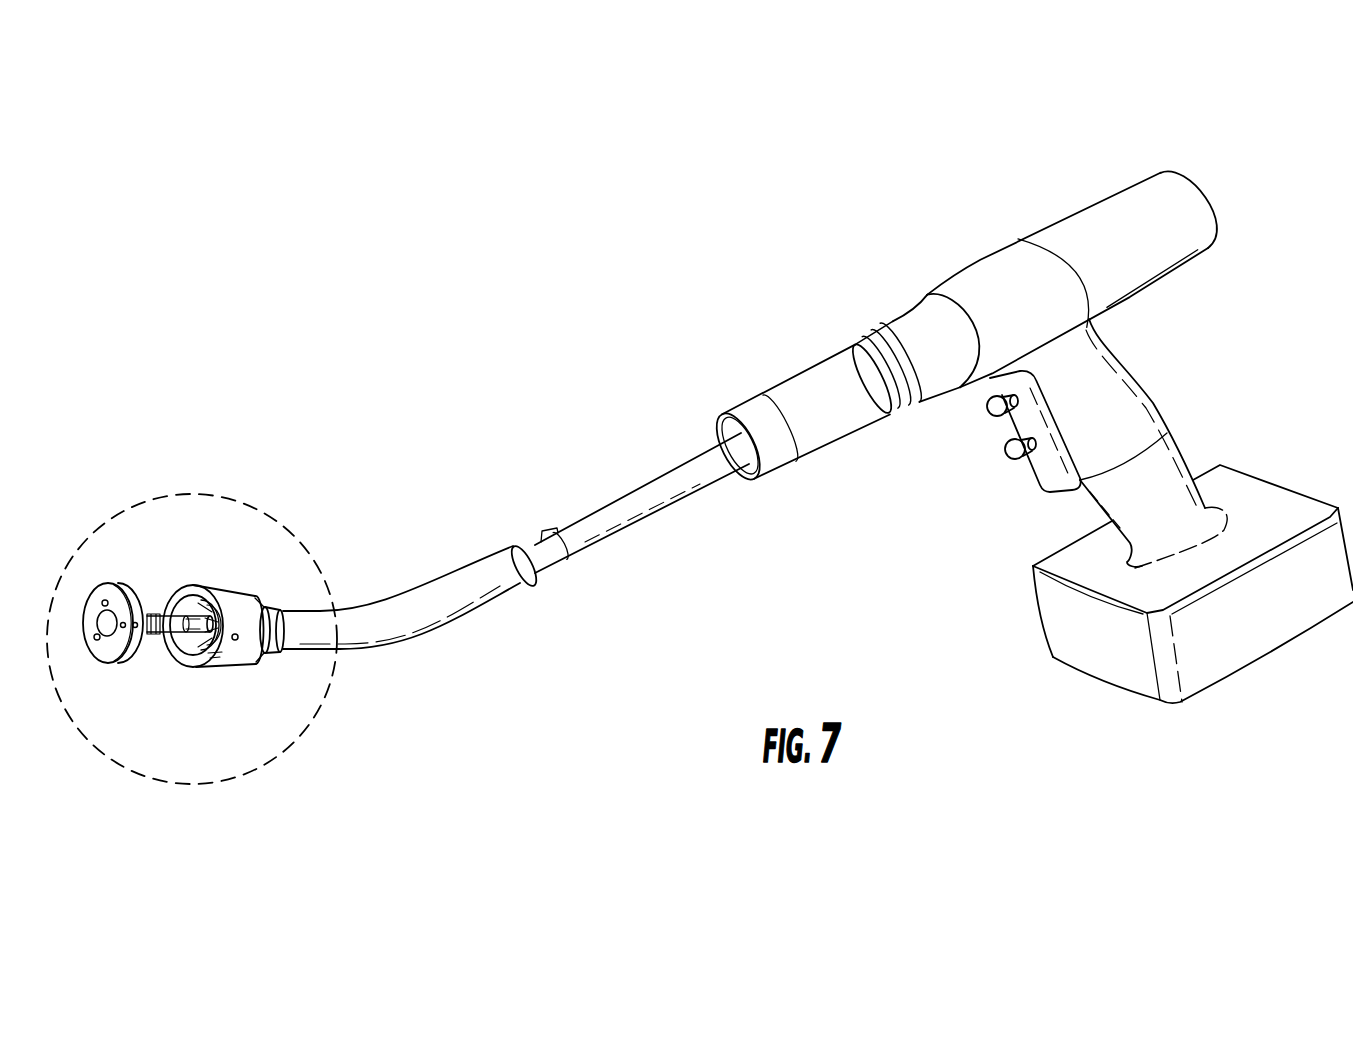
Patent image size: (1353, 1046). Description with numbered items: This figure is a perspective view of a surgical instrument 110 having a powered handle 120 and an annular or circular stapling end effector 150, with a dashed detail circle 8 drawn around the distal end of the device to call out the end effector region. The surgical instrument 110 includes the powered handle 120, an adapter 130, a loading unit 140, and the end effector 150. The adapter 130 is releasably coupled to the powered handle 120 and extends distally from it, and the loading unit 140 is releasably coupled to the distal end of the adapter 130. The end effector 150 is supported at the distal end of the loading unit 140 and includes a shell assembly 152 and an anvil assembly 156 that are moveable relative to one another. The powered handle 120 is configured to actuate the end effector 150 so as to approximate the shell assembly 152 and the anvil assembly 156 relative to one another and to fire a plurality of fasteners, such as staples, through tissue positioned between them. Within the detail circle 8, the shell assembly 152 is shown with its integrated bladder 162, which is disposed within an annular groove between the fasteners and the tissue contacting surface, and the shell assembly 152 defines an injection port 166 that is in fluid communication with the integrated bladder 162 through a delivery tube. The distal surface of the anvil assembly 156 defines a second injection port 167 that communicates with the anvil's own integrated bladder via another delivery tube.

The detail circle 8 is at (243, 505).
The surgical instrument 110 is at (787, 251).
The powered handle 120 is at (1043, 213).
The adapter 130 is at (787, 478).
The loading unit 140 is at (418, 657).
The end effector 150 is at (208, 690).
The shell assembly 152 is at (257, 587).
The anvil assembly 156 is at (113, 667).
The integrated bladder 162 is at (193, 595).
The injection port 166 is at (236, 639).
The second injection port 167 is at (134, 623).